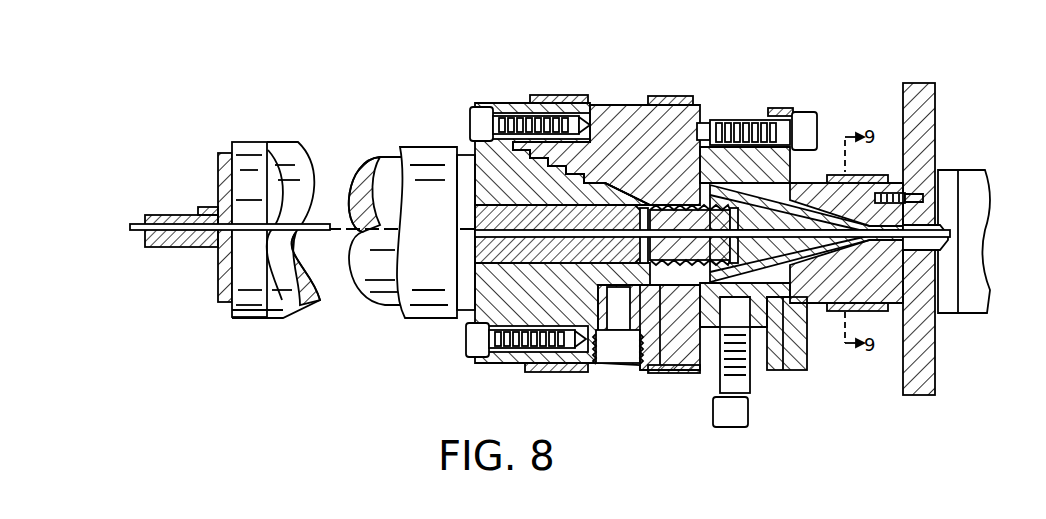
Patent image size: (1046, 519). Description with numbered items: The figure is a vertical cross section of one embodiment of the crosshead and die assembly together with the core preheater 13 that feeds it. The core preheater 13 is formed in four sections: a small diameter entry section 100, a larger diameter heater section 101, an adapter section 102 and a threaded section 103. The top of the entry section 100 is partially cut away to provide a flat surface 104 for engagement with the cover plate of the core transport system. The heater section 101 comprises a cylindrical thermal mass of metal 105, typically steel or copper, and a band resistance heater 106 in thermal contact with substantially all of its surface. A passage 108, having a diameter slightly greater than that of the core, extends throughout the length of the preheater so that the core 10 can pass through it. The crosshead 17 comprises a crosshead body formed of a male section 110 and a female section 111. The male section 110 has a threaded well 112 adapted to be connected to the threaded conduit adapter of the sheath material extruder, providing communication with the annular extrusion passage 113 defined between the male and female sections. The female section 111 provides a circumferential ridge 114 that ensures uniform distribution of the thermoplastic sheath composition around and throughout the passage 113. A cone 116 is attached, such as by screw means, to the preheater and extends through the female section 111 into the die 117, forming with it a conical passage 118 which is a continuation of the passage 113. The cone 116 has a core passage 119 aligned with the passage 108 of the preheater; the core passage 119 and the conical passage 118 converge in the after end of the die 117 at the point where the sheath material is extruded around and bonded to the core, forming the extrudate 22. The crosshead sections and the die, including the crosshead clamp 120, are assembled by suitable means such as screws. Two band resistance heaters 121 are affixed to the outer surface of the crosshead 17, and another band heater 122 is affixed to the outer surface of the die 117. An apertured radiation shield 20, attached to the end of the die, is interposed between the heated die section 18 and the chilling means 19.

The rod 10 is at (133, 221).
The core preheater 13 is at (249, 133).
The crosshead 17 is at (490, 96).
The heated die section 18 is at (883, 168).
The chilling means 19 is at (962, 168).
The apertured radiation shield 20 is at (933, 86).
The extrudate 22 is at (933, 253).
The entry section 100 is at (170, 247).
The heater section 101 is at (267, 317).
The adapter section 102 is at (507, 253).
The threaded section 103 is at (665, 207).
The flat surface 104 is at (173, 213).
The thermal mass of metal 105 is at (380, 158).
The band resistance heater 106 is at (437, 157).
The passage 108 is at (445, 318).
The male section 110 is at (628, 122).
The female section 111 is at (567, 180).
The threaded well 112 is at (617, 350).
The annular extrusion passage 113 is at (677, 297).
The circumferential ridge 114 is at (657, 300).
The cone 116 is at (715, 190).
The die 117 is at (812, 287).
The passage 118 is at (790, 207).
The core passage 119 is at (783, 370).
The crosshead clamp 120 is at (773, 372).
The band resistance heaters 121 is at (553, 102).
The band heater 122 is at (858, 312).